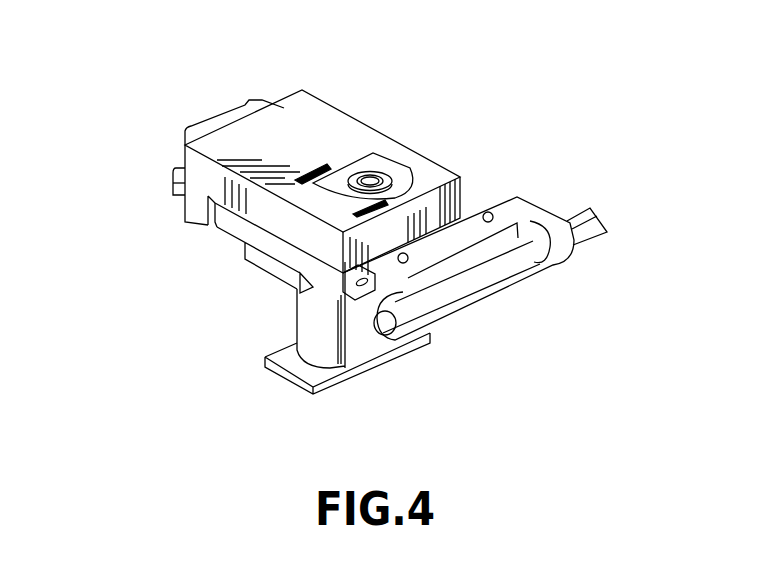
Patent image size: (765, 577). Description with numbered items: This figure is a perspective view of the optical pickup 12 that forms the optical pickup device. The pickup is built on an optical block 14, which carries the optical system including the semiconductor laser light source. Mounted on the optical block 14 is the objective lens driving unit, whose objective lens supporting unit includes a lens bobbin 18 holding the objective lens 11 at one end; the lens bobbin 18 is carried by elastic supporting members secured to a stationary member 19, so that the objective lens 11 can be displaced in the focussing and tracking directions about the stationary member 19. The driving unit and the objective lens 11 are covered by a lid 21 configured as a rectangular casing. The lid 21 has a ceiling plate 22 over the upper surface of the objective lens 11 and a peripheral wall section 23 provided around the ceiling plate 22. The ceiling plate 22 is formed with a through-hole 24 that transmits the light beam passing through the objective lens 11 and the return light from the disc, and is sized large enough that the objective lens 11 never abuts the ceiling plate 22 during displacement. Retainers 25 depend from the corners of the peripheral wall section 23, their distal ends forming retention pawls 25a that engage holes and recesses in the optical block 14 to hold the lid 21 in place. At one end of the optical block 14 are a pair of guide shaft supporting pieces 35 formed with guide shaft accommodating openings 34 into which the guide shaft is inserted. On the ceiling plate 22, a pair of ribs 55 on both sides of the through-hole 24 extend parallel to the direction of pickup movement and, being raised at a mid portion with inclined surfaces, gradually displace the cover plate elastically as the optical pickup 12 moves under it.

The objective lens 11 is at (372, 182).
The optical pickup 12 is at (256, 258).
The optical block 14 is at (333, 350).
The lens bobbin 18 is at (366, 176).
The stationary member 19 is at (248, 100).
The lid 21 is at (313, 102).
The ceiling plate 22 is at (223, 141).
The peripheral wall section 23 is at (238, 203).
The through-hole 24 is at (402, 160).
The retainers 25 is at (190, 205).
The retention pawls 25a is at (200, 226).
The guide shaft accommodating openings 34 is at (393, 333).
The guide shaft supporting pieces 35 is at (430, 320).
The ribs 55 is at (310, 176).